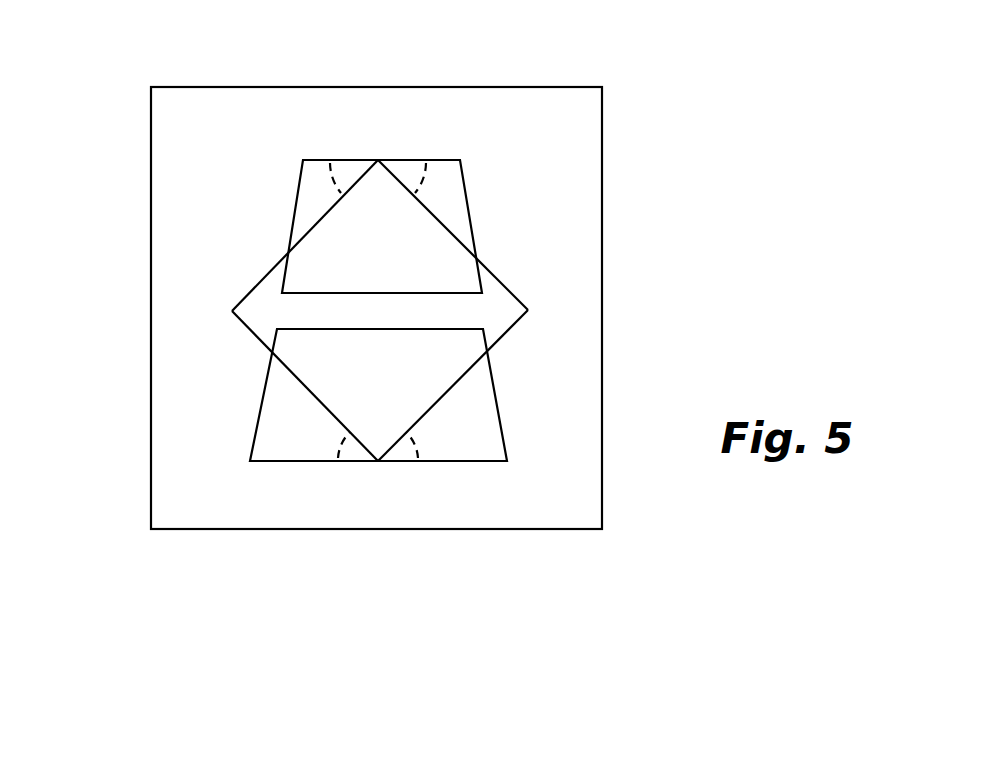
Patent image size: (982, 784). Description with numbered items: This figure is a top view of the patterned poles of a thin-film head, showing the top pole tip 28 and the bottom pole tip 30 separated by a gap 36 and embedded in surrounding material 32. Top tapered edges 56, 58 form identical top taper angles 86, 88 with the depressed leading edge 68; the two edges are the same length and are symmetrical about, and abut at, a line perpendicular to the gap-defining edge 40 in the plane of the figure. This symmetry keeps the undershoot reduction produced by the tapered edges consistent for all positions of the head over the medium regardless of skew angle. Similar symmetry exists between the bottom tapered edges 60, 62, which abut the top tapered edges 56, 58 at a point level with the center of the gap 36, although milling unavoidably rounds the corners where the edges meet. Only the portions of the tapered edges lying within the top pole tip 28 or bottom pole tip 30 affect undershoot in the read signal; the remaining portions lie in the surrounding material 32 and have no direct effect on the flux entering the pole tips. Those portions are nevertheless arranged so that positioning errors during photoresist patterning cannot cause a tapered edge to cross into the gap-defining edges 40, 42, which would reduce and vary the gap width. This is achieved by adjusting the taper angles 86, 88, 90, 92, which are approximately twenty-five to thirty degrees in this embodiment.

The top pole tip 28 is at (314, 194).
The bottom pole tip 30 is at (288, 412).
The surrounding material 32 is at (538, 226).
The gap 36 is at (301, 312).
The gap-defining edge 40 is at (487, 299).
The gap-defining edge 42 is at (439, 335).
The top tapered edge 56 is at (511, 274).
The top tapered edge 58 is at (254, 273).
The bottom tapered edge 60 is at (451, 405).
The bottom tapered edge 62 is at (261, 350).
The depressed leading edge 68 is at (449, 154).
The top taper angle 86 is at (348, 172).
The top taper angle 88 is at (406, 172).
The taper angle 90 is at (352, 450).
The taper angle 92 is at (402, 453).